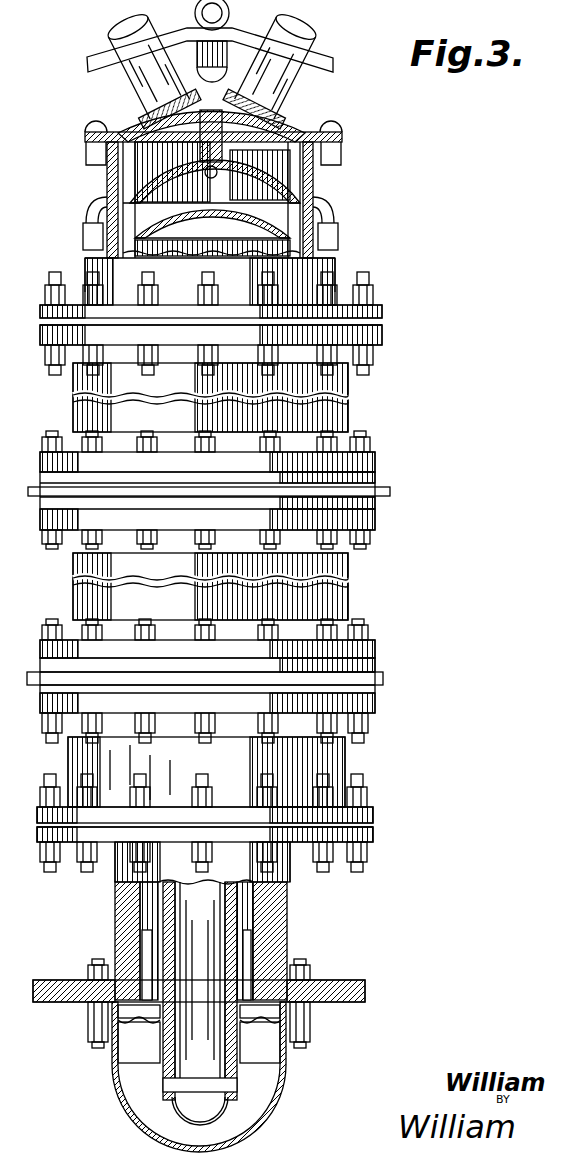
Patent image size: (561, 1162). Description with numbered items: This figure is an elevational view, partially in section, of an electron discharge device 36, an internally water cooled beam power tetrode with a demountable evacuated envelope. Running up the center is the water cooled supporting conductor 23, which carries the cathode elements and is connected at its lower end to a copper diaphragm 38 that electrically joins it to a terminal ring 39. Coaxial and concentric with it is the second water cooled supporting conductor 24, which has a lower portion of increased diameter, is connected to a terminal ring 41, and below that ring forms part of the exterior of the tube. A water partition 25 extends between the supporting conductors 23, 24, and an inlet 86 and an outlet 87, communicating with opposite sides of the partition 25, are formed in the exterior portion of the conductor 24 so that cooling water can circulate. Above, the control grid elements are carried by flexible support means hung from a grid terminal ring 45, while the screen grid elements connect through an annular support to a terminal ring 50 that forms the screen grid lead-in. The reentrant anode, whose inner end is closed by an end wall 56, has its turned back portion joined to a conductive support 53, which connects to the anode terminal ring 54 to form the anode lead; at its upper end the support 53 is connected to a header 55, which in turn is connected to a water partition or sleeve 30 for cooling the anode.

The supporting conductor 23 is at (227, 966).
The supporting conductor 24 is at (283, 892).
The water partition 25 is at (143, 935).
The water partition or sleeve 30 is at (310, 212).
The electron discharge device 36 is at (370, 386).
The copper diaphragm 38 is at (199, 1034).
The terminal ring 39 is at (288, 1058).
The terminal ring 41 is at (375, 840).
The grid terminal ring 45 is at (384, 680).
The terminal ring 50 is at (386, 492).
The conductive support 53 is at (313, 182).
The anode terminal ring 54 is at (385, 312).
The header 55 is at (302, 130).
The end wall 56 is at (210, 206).
The inlet 86 is at (123, 895).
The outlet 87 is at (258, 950).